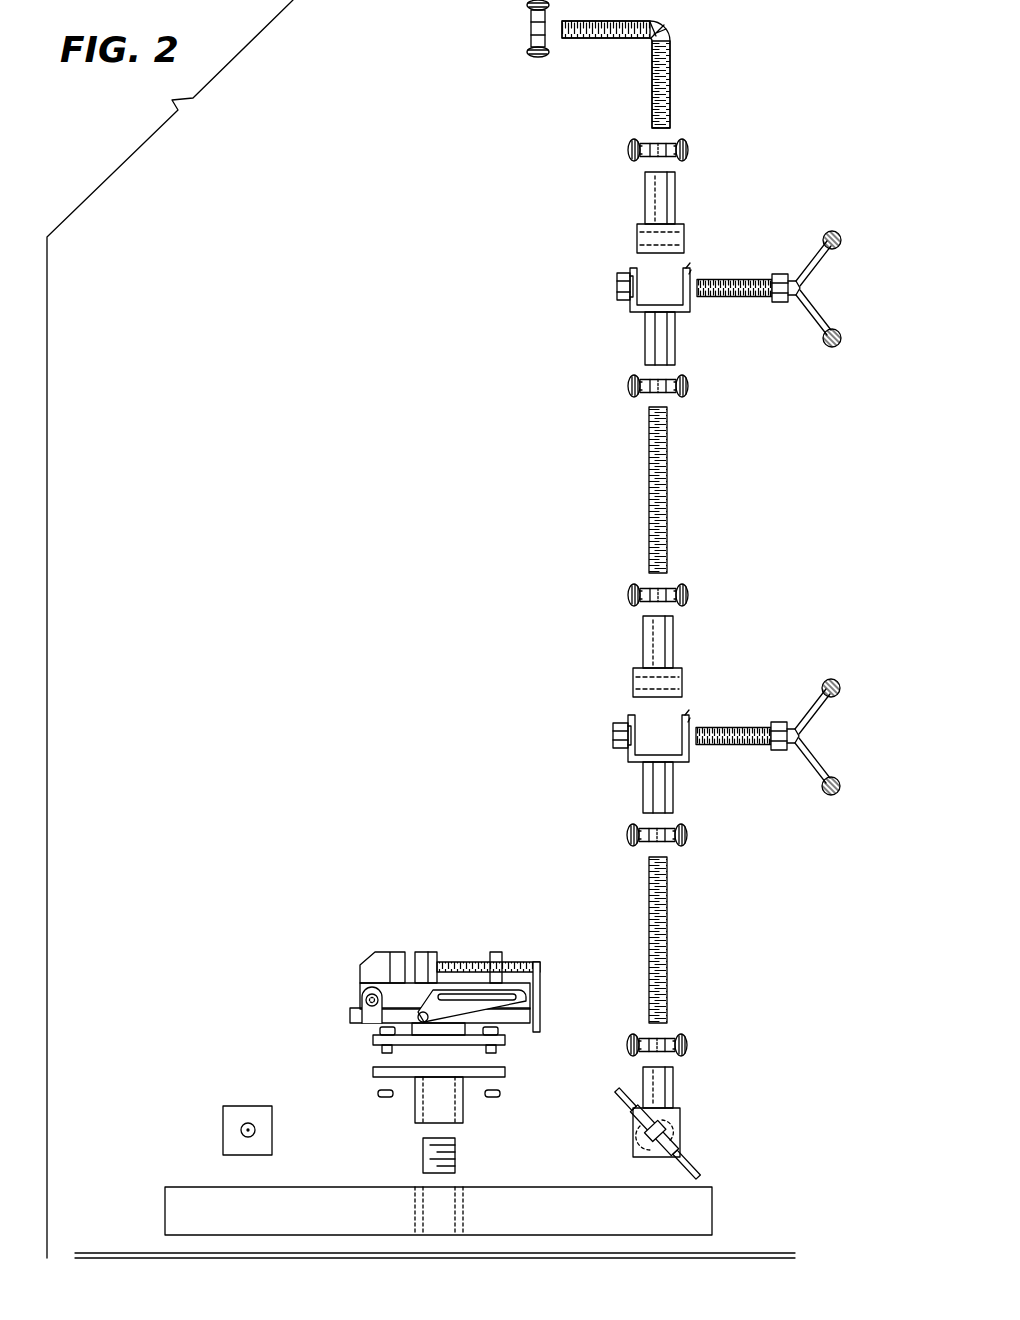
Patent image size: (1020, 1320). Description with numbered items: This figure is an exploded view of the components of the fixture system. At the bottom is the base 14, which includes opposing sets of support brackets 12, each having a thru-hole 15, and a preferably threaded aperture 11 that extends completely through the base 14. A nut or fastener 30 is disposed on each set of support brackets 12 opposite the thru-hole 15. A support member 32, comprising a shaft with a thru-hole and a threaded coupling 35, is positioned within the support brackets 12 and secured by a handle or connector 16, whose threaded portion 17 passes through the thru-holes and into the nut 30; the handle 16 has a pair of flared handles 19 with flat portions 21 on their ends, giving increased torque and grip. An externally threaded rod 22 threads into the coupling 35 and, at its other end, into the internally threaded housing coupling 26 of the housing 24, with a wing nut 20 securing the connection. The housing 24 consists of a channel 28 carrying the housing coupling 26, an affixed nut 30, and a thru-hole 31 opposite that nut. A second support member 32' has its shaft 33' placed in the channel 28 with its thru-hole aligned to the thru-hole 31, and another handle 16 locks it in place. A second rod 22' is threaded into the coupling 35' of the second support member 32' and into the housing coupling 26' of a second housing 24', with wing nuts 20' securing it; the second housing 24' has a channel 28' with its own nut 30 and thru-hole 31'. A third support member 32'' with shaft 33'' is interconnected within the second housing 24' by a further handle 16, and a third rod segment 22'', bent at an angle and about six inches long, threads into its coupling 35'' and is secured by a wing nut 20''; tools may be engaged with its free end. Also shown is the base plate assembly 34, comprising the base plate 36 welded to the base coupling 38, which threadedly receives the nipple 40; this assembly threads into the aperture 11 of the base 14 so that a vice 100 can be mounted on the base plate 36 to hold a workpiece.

The aperture 11 is at (432, 1210).
The support brackets 12 is at (683, 1127).
The base 14 is at (180, 1186).
The thru-hole 15 is at (250, 1130).
The handle or connector 16 is at (800, 288).
The threaded portion 17 is at (724, 728).
The flared handles 19 is at (800, 722).
The wing nut 20 is at (649, 940).
The wing nut 20' is at (653, 490).
The wing nut 20'' is at (605, 80).
The flat portions 21 is at (832, 683).
The rod 22 is at (701, 940).
The second rod 22' is at (705, 490).
The third rod segment 22'' is at (665, 74).
The housing 24 is at (609, 787).
The second housing 24' is at (610, 338).
The housing coupling 26 is at (703, 790).
The housing coupling 26' is at (708, 339).
The channel 28 is at (617, 747).
The channel 28' is at (617, 299).
The nut or fastener 30 is at (617, 287).
The thru-hole 31 is at (716, 672).
The thru-hole 31' is at (722, 251).
The support member 32 is at (698, 1087).
The second support member 32' is at (609, 642).
The third support member 32'' is at (610, 198).
The shaft 33' is at (613, 680).
The shaft 33'' is at (614, 238).
The base plate assembly 34 is at (418, 1138).
The coupling 35 is at (599, 1075).
The coupling 35' is at (600, 632).
The coupling 35'' is at (602, 185).
The base plate 36 is at (375, 1072).
The base coupling 38 is at (425, 1112).
The nipple 40 is at (425, 1160).
The vice 100 is at (365, 972).